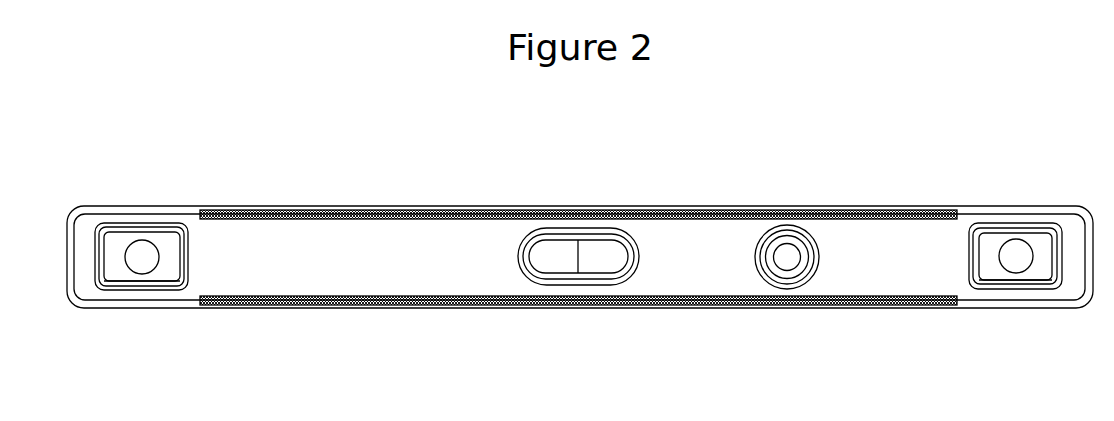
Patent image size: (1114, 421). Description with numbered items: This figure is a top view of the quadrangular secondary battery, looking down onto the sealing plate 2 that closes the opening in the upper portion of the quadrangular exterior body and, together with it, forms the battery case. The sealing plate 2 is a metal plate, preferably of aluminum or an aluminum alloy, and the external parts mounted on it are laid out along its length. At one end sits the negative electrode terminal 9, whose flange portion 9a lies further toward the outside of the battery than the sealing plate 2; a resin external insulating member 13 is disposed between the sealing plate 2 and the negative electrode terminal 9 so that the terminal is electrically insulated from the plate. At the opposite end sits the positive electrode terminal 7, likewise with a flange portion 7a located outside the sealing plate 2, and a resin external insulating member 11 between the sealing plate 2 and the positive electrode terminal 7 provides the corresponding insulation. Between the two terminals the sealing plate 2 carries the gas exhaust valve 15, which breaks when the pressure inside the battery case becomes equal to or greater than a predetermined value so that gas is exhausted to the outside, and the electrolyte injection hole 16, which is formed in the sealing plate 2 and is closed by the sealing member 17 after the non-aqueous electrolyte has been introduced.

The sealing plate 2 is at (695, 270).
The positive electrode terminal 7 is at (1015, 268).
The flange portion 7a is at (1037, 263).
The negative electrode terminal 9 is at (142, 268).
The flange portion 9a is at (168, 258).
The external insulating member 11 is at (1018, 228).
The external insulating member 13 is at (153, 228).
The gas exhaust valve 15 is at (560, 262).
The electrolyte injection hole 16 is at (790, 268).
The sealing member 17 is at (787, 250).